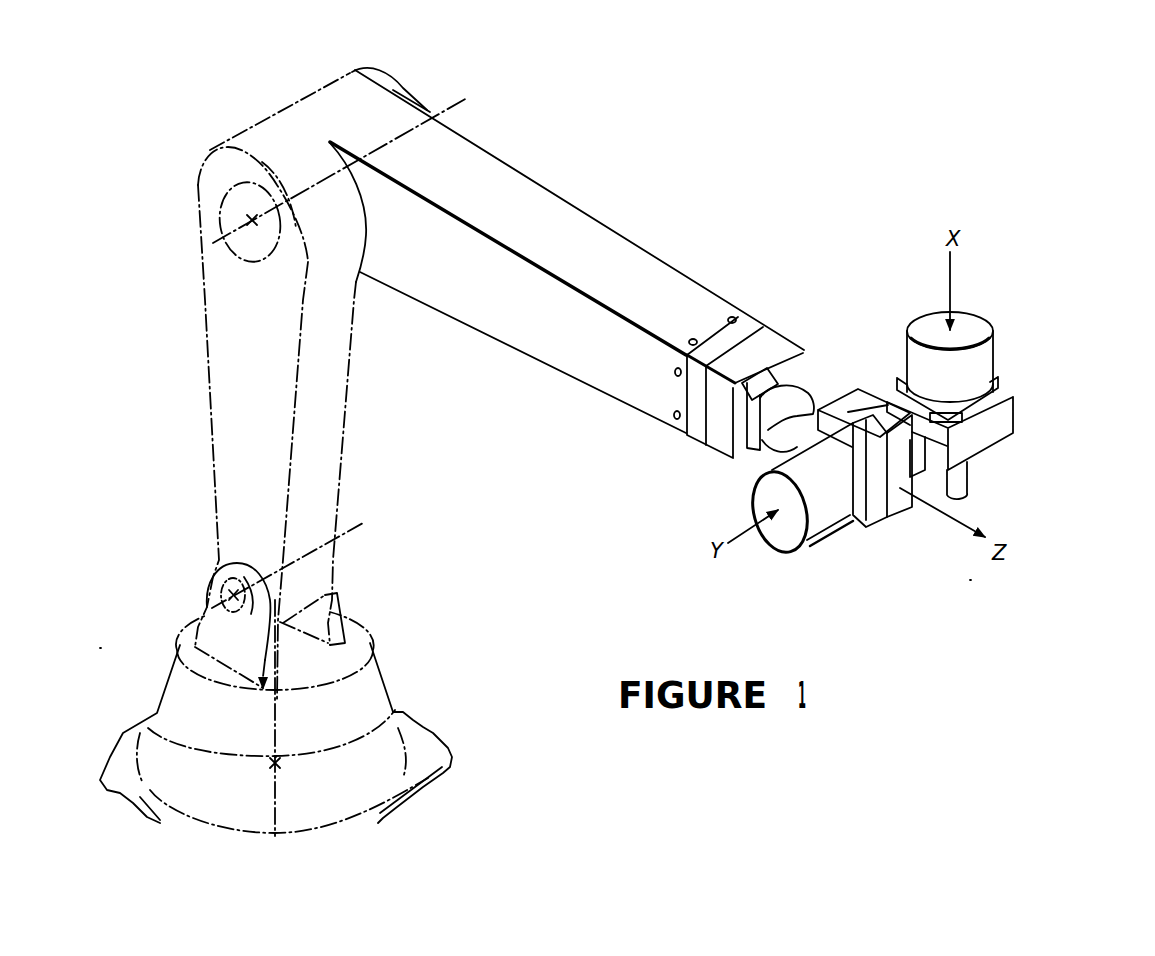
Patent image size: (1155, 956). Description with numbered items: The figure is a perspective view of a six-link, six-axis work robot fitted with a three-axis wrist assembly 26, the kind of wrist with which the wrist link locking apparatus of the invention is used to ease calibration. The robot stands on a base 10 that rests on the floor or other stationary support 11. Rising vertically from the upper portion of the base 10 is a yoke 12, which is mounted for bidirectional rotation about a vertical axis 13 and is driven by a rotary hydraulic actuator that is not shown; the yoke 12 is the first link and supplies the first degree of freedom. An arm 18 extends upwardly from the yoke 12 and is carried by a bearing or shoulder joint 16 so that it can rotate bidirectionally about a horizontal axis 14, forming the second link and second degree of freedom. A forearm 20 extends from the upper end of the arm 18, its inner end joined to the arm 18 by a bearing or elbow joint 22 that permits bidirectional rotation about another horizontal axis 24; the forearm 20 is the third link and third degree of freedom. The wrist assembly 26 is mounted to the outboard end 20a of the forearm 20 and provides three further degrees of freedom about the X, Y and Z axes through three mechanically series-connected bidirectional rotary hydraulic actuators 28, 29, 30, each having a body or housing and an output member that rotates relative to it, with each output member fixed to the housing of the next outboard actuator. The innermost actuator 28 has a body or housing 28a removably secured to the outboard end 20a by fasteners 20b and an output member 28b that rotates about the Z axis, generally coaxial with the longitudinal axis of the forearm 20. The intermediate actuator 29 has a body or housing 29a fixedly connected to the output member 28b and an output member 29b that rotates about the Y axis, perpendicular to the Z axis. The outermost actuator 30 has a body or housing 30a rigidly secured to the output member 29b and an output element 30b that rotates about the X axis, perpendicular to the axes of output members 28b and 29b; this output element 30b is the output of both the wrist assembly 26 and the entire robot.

The base 10 is at (103, 648).
The stationary support 11 is at (112, 768).
The yoke 12 is at (204, 600).
The vertical axis 13 is at (277, 732).
The horizontal axis 14 is at (350, 535).
The shoulder joint 16 is at (235, 568).
The arm 18 is at (345, 467).
The forearm 20 is at (522, 346).
The outboard end 20a is at (672, 400).
The fasteners 20b is at (674, 373).
The elbow joint 22 is at (246, 112).
The horizontal axis 24 is at (213, 245).
The wrist assembly 26 is at (972, 582).
The rotary hydraulic actuator 28 is at (688, 458).
The body or housing 28a is at (724, 436).
The output member 28b is at (835, 395).
The rotary hydraulic actuator 29 is at (881, 530).
The body or housing 29a is at (899, 492).
The output member 29b is at (960, 438).
The rotary hydraulic actuator 30 is at (1022, 390).
The body or housing 30a is at (1010, 417).
The output element 30b is at (963, 496).